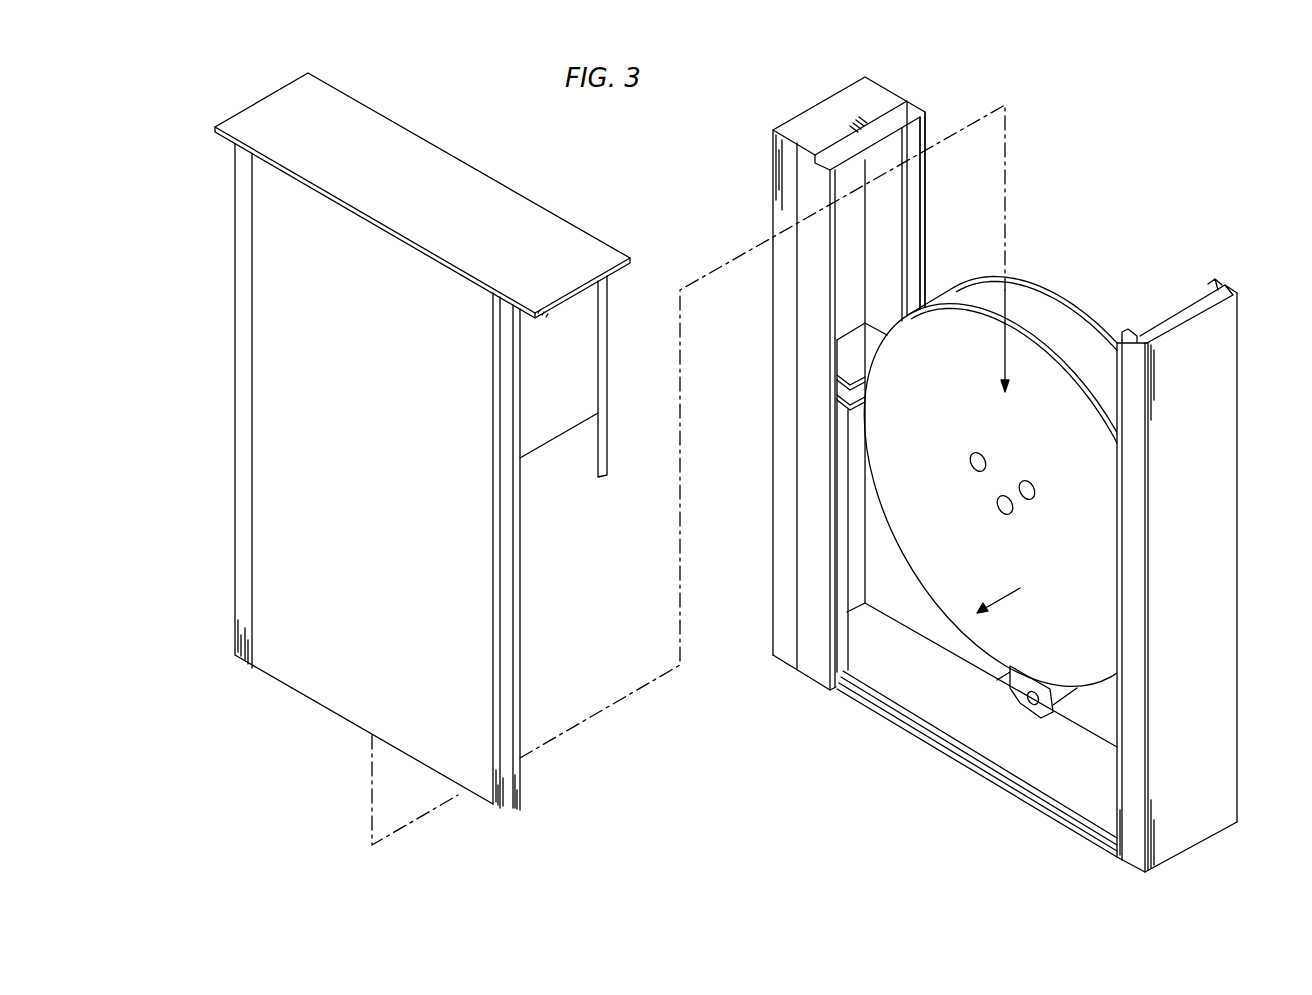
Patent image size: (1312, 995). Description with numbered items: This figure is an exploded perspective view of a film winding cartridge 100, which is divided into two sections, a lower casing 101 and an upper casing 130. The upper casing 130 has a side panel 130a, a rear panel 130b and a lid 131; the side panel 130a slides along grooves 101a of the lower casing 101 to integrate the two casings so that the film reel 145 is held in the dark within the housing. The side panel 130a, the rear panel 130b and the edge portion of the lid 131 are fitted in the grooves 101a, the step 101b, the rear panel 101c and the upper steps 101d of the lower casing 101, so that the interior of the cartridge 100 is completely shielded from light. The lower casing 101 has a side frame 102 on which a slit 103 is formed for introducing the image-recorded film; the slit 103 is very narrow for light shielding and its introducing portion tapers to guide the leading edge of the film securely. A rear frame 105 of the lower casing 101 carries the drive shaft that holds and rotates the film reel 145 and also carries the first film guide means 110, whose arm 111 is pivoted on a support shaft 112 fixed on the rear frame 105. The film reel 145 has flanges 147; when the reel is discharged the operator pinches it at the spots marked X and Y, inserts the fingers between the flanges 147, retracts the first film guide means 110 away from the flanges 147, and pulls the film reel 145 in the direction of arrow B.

The cartridge 100 is at (710, 170).
The lower casing 101 is at (1243, 354).
The grooves 101a is at (828, 604).
The step 101b is at (900, 712).
The rear panel 101c is at (930, 224).
The upper steps 101d is at (1213, 278).
The side frame 102 is at (849, 383).
The slit 103 is at (838, 392).
The rear frame 105 is at (912, 625).
The first film guide means 110 is at (1017, 714).
The arm 111 is at (1008, 682).
The support shaft 112 is at (1028, 702).
The upper casing 130 is at (400, 441).
The side panel 130a is at (235, 318).
The rear panel 130b is at (581, 457).
The lid 131 is at (508, 193).
The film reel 145 is at (1011, 491).
The flanges 147 is at (1094, 318).